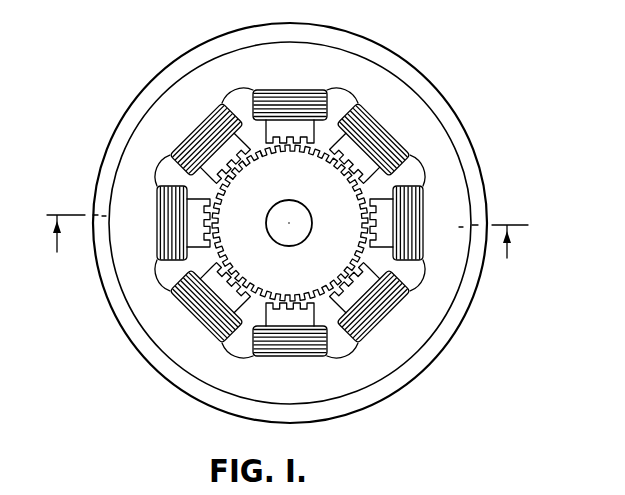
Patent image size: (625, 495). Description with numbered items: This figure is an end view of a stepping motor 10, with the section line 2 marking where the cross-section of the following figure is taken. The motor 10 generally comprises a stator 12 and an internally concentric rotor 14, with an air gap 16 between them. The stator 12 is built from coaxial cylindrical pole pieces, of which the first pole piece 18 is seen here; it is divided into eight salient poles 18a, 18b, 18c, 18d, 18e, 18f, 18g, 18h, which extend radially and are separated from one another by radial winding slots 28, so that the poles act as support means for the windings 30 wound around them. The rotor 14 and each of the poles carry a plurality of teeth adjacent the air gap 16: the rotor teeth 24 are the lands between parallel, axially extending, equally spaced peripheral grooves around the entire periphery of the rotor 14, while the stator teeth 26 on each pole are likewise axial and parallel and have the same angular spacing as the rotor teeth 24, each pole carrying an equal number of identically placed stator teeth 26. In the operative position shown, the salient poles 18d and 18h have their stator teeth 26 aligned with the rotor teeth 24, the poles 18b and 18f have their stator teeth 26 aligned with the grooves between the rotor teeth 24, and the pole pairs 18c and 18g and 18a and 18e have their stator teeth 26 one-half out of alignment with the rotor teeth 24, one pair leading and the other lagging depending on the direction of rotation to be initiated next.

The section line 2— 2 is at (282, 237).
The stepping motor 10 is at (500, 309).
The stator 12 is at (394, 352).
The rotor 14 is at (308, 274).
The air gap 16 is at (204, 251).
The first pole piece 18 is at (227, 387).
The salient pole 18a is at (195, 219).
The salient pole 18b is at (228, 150).
The salient pole 18c is at (291, 130).
The salient pole 18d is at (360, 160).
The salient pole 18e is at (380, 236).
The salient pole 18f is at (352, 295).
The salient pole 18g is at (281, 317).
The salient pole 18h is at (223, 290).
The rotor teeth 24 is at (258, 168).
The stator teeth 26 is at (236, 165).
The radial winding slots 28 is at (417, 170).
The windings 30 is at (356, 102).